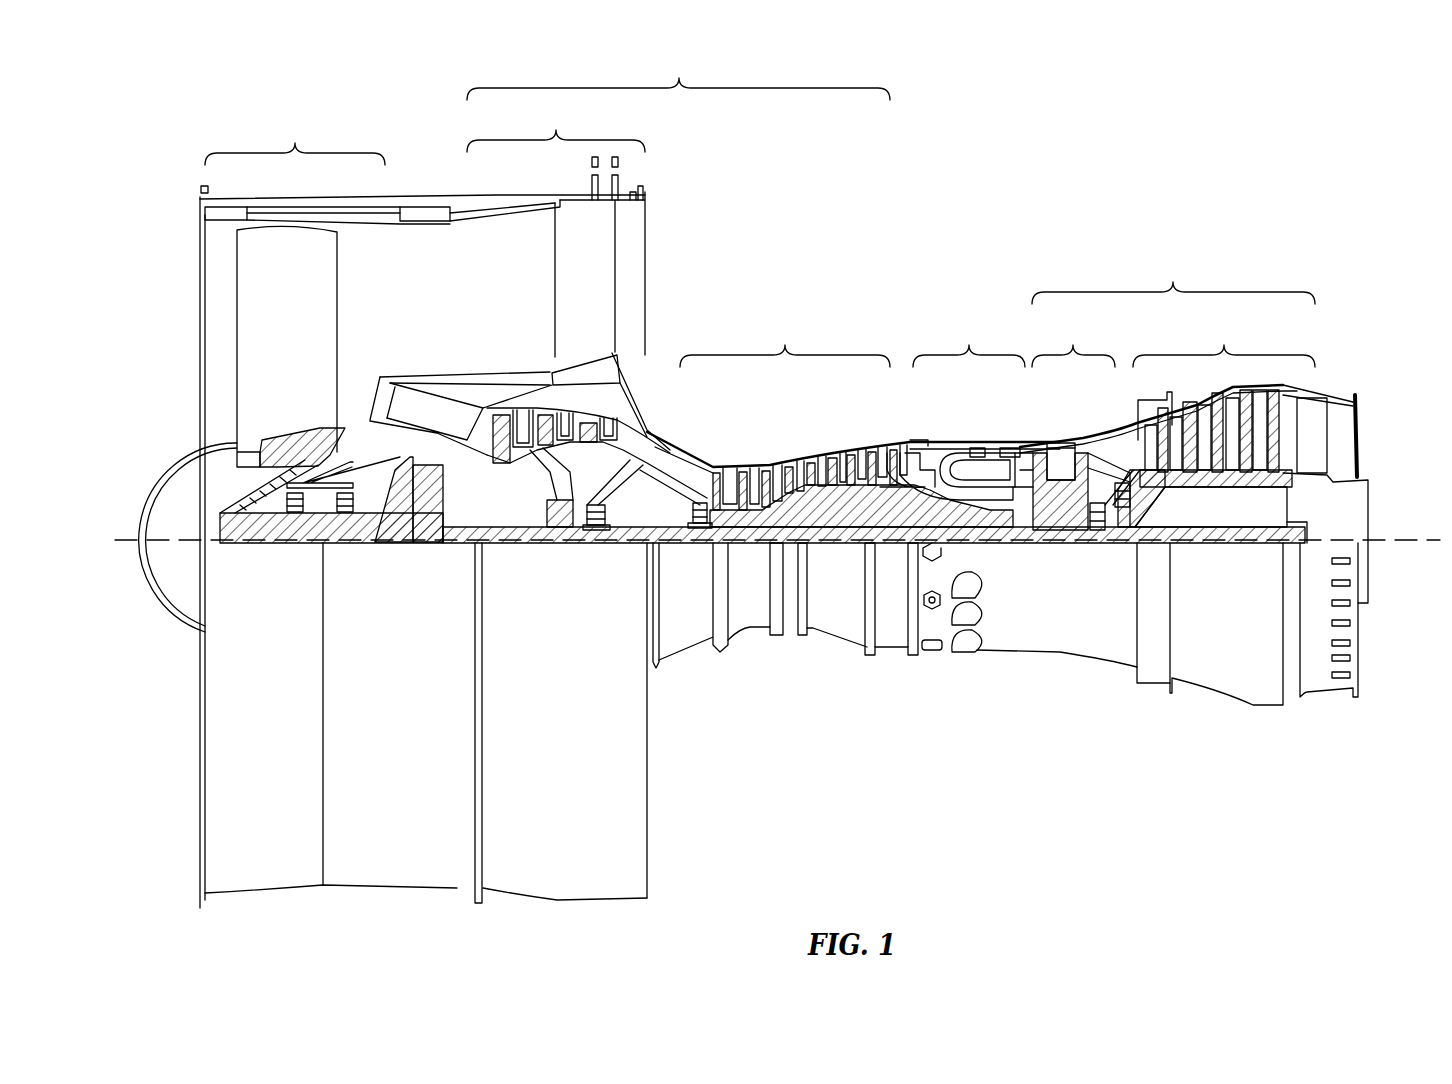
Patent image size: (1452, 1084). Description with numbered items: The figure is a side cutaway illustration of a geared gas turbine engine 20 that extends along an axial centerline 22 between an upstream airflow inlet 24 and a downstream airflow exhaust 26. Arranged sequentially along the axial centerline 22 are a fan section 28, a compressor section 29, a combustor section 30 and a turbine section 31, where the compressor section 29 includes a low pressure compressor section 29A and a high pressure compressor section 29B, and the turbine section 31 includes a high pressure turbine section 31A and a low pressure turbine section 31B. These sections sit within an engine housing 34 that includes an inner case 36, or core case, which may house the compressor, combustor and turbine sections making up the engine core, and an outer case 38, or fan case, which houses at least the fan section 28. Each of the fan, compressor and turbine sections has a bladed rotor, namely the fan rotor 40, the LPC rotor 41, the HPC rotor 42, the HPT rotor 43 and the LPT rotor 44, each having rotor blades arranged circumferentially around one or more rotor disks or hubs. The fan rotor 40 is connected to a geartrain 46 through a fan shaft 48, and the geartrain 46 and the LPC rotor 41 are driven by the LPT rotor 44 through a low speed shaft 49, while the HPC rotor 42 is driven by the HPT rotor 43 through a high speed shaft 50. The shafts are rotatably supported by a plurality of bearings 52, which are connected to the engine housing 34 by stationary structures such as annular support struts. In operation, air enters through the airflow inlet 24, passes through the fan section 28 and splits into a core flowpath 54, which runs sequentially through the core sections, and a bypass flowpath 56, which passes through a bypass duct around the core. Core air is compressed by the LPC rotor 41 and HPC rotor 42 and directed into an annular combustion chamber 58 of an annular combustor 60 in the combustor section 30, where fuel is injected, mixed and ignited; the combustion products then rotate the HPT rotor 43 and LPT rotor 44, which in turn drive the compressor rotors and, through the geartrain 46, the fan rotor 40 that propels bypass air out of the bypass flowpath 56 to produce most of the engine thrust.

The gas turbine engine 20 is at (151, 198).
The axial centerline 22 is at (1422, 546).
The airflow inlet 24 is at (200, 285).
The airflow exhaust 26 is at (1367, 430).
The fan section 28 is at (295, 290).
The compressor section 29 is at (715, 256).
The low pressure compressor section 29A is at (556, 280).
The high pressure compressor section 29B is at (793, 411).
The combustor section 30 is at (952, 409).
The turbine section 31 is at (1167, 350).
The high pressure turbine section 31A is at (1086, 422).
The low pressure turbine section 31B is at (1224, 395).
The engine housing 34 is at (676, 672).
The inner case 36 is at (890, 648).
The outer case 38 is at (598, 900).
The fan rotor 40 is at (232, 458).
The LPC rotor 41 is at (545, 496).
The HPC rotor 42 is at (835, 501).
The HPT rotor 43 is at (1060, 513).
The LPT rotor 44 is at (1220, 484).
The geartrain 46 is at (432, 531).
The fan shaft 48 is at (275, 541).
The low speed shaft 49 is at (1230, 544).
The high speed shaft 50 is at (990, 531).
The bearings 52 is at (333, 513).
The core flowpath 54 is at (669, 462).
The bypass flowpath 56 is at (450, 313).
The combustion chamber 58 is at (970, 466).
The combustor 60 is at (1010, 447).